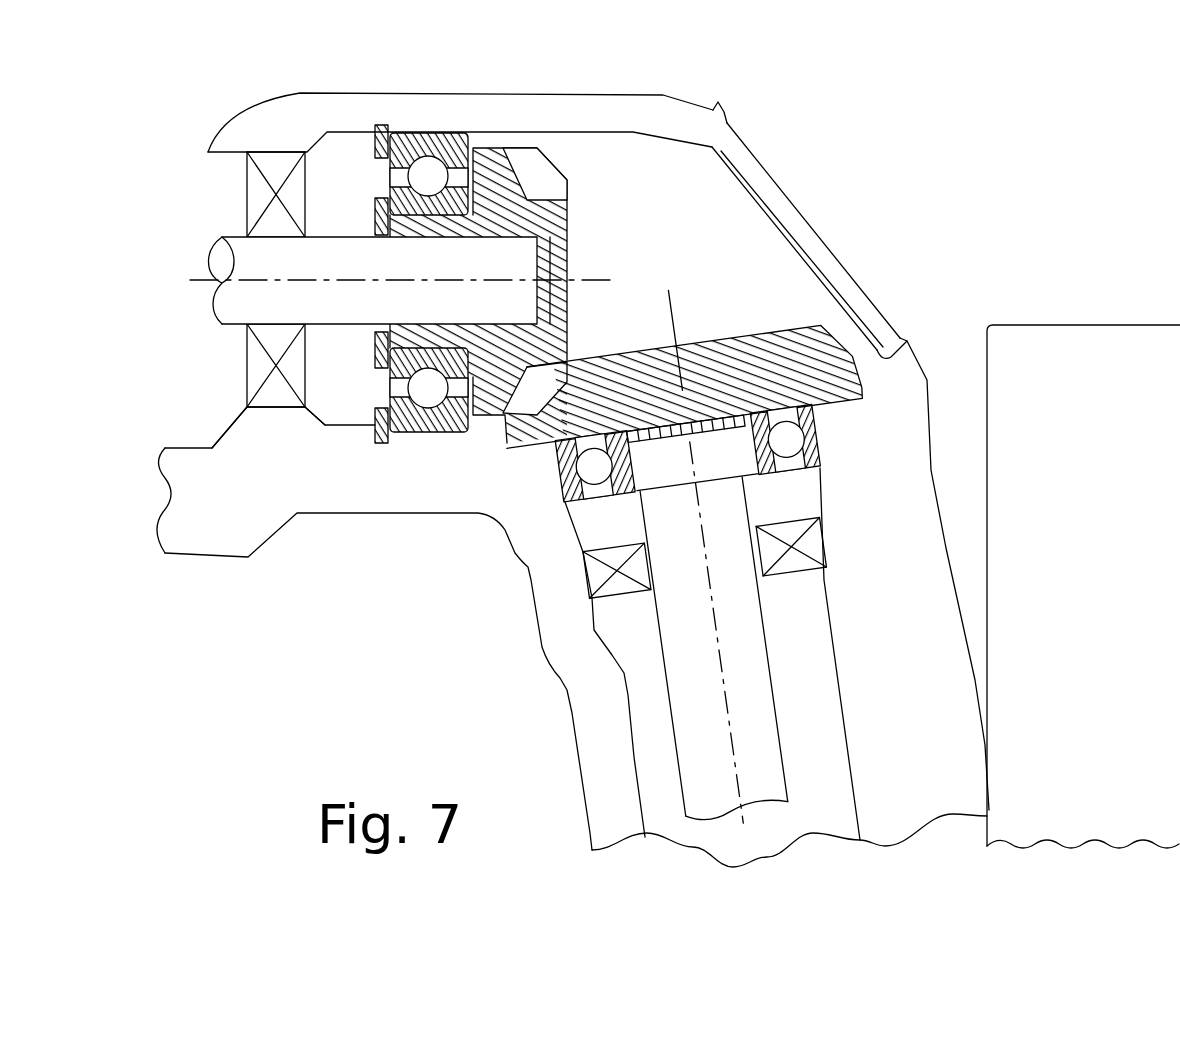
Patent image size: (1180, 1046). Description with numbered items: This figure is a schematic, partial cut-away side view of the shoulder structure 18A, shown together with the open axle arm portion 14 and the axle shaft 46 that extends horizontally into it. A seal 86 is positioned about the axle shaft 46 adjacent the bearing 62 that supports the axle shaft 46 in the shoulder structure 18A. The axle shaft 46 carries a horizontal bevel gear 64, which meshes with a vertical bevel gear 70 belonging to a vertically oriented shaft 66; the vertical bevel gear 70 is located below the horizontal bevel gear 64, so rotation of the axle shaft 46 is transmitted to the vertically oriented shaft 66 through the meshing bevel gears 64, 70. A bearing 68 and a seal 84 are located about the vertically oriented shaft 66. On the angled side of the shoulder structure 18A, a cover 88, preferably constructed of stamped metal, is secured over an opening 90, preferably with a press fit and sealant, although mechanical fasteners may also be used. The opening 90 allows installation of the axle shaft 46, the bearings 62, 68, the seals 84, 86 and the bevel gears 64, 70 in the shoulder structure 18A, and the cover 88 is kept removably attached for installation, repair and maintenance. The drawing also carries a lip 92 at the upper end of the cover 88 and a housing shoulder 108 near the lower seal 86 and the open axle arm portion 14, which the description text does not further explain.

The open axle arm portion 14 is at (327, 535).
The shoulder structure 18A is at (910, 280).
The axle shaft 46 is at (402, 273).
The bearing 62 is at (443, 148).
The horizontal bevel gear 64 is at (558, 222).
The vertically oriented shaft 66 is at (757, 710).
The bearing 68 is at (823, 438).
The vertical bevel gear 70 is at (783, 337).
The seal 84 is at (813, 543).
The seal 86 is at (257, 195).
The cover 88 is at (783, 193).
The opening 90 is at (802, 262).
The lip 92 is at (723, 125).
The housing shoulder 108 is at (247, 405).